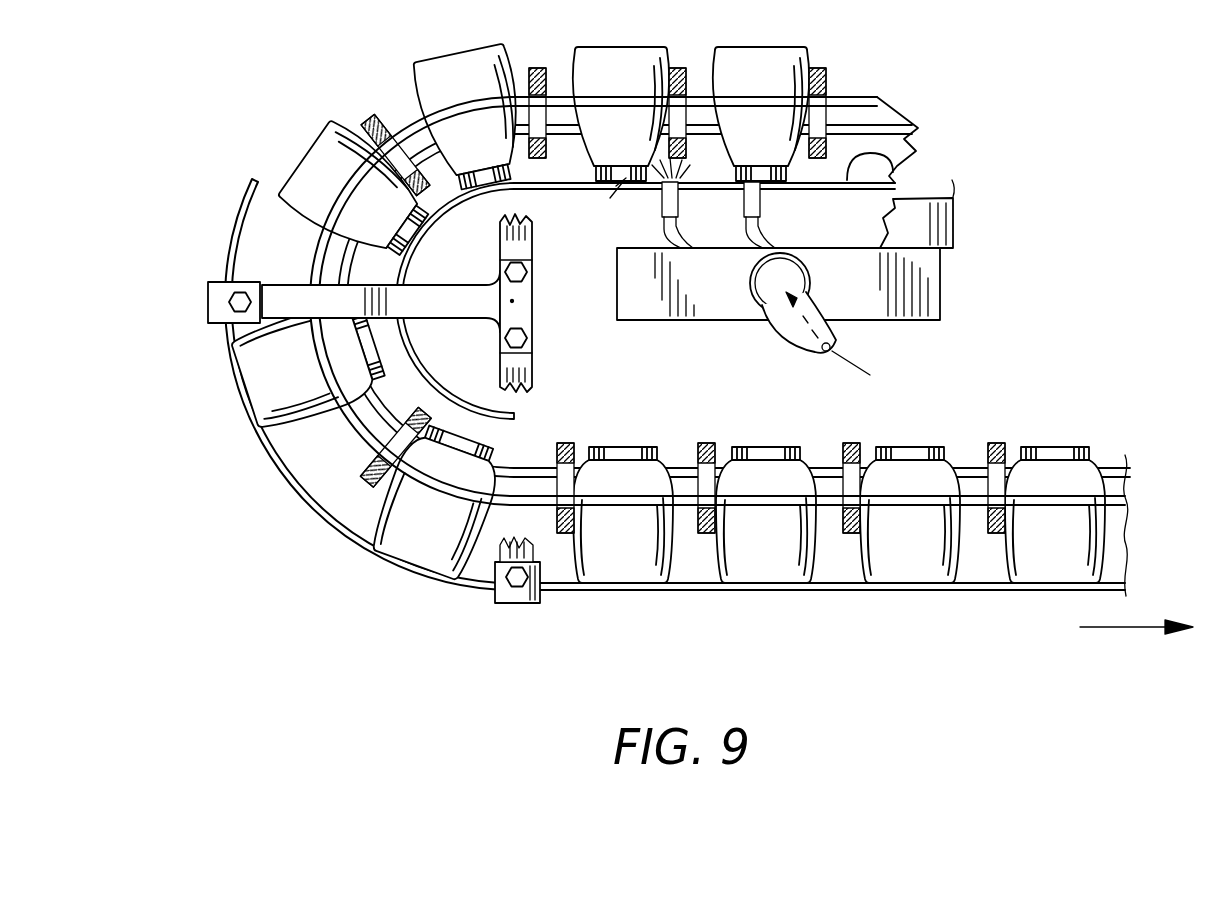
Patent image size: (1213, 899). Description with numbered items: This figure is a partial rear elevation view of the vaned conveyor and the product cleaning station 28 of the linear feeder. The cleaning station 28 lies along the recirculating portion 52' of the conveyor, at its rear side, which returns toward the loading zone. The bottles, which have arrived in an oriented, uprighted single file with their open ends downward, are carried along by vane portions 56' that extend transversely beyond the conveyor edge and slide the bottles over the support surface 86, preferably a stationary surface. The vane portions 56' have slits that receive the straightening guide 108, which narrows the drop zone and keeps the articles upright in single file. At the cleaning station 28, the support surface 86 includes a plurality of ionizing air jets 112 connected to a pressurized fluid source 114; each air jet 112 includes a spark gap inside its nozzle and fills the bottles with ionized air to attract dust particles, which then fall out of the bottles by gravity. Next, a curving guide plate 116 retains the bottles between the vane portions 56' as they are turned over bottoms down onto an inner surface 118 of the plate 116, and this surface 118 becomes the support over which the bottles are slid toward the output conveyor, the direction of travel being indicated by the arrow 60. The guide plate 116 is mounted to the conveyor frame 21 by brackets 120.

The frame 21 is at (522, 240).
The cleaning station 28 is at (358, 567).
The recirculating portion 52' is at (391, 272).
The vane portions 56' is at (767, 323).
The direction of travel arrow 60 is at (1115, 628).
The support surface 86 is at (905, 163).
The straightening guide 108 is at (860, 92).
The ionizing air jets 112 is at (678, 208).
The pressurized fluid source 114 is at (922, 291).
The curving guide plate 116 is at (238, 233).
The inner surface 118 is at (845, 573).
The brackets 120 is at (213, 304).